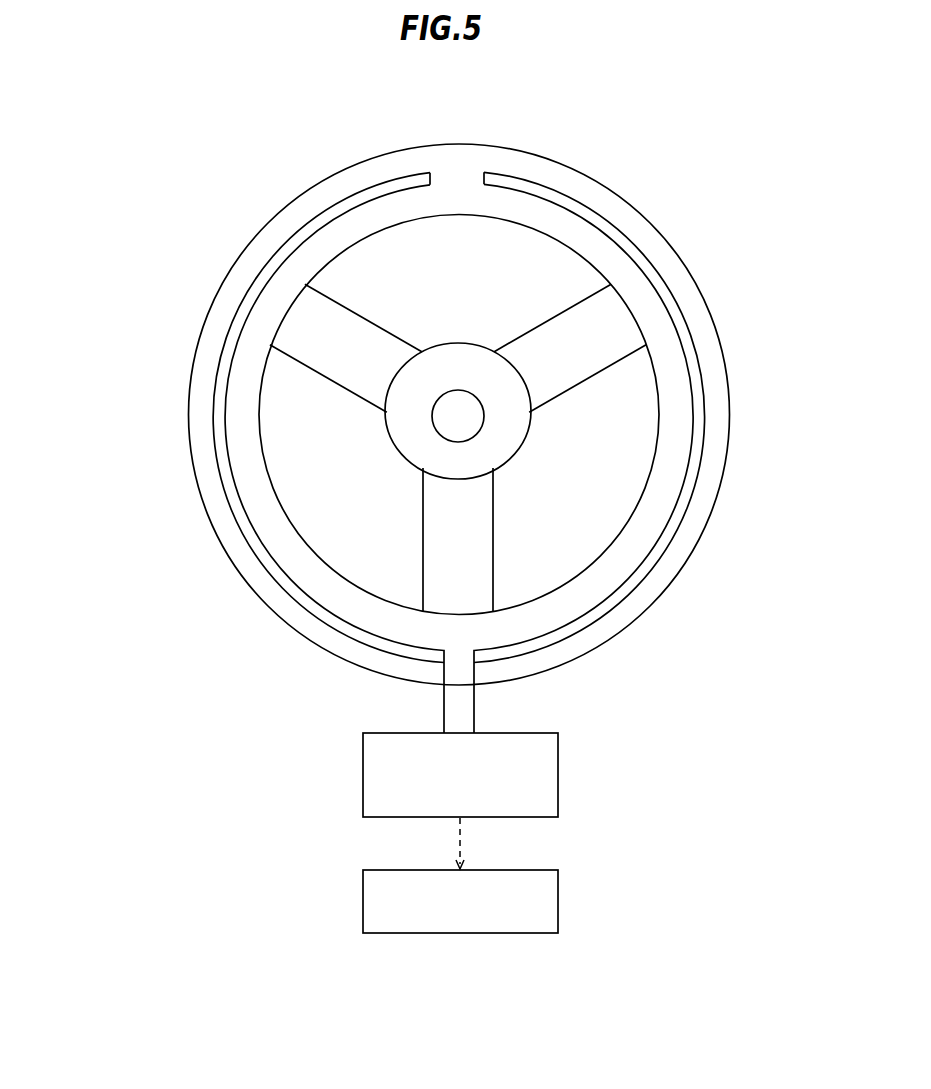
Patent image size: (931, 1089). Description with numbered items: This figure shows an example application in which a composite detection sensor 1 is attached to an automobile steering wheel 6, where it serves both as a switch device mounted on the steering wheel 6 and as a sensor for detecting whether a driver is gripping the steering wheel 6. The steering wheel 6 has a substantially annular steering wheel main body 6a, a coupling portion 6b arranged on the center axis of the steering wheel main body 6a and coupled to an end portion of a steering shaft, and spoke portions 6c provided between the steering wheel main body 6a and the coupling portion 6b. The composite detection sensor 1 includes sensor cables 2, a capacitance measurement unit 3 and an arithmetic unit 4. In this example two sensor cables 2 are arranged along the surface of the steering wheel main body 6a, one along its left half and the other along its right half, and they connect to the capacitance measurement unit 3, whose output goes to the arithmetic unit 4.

The composite detection sensor 1 is at (327, 715).
The sensor cable 2 is at (280, 253).
The capacitance measurement unit 3 is at (558, 773).
The arithmetic unit 4 is at (558, 897).
The steering wheel 6 is at (367, 145).
The steering wheel main body 6a is at (510, 163).
The coupling portion 6b is at (518, 453).
The spoke portions 6c is at (371, 335).